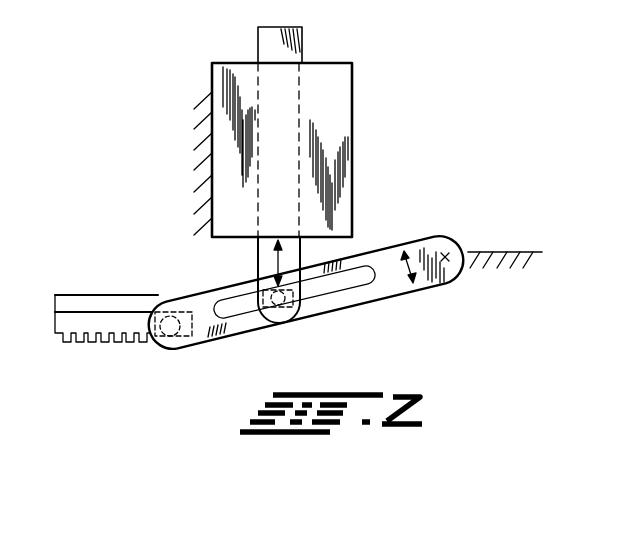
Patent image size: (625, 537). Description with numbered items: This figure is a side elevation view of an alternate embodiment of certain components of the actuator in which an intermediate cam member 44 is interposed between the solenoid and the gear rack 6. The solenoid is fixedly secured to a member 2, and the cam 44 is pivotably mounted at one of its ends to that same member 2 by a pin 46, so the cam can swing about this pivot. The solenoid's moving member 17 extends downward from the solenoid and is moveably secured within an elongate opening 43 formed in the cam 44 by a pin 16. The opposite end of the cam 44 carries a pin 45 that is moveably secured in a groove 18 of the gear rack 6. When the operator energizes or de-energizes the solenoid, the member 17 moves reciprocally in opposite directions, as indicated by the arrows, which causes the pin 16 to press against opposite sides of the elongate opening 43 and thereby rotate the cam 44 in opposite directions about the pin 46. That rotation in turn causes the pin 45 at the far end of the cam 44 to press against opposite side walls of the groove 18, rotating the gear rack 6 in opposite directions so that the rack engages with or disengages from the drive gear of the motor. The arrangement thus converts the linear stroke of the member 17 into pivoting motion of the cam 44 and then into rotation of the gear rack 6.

The member 2 is at (513, 252).
The gear rack 6 is at (72, 295).
The pin 16 is at (277, 303).
The member 17 is at (258, 252).
The groove 18 is at (122, 317).
The elongate opening 43 is at (320, 290).
The intermediate cam member 44 is at (358, 305).
The pin 45 is at (168, 337).
The pin 46 is at (445, 257).